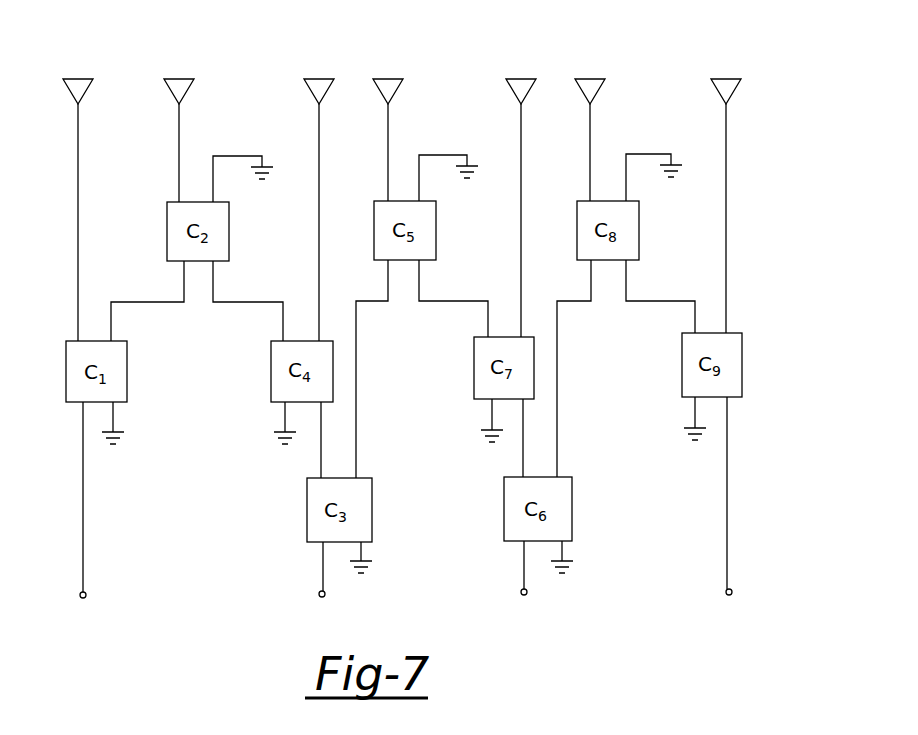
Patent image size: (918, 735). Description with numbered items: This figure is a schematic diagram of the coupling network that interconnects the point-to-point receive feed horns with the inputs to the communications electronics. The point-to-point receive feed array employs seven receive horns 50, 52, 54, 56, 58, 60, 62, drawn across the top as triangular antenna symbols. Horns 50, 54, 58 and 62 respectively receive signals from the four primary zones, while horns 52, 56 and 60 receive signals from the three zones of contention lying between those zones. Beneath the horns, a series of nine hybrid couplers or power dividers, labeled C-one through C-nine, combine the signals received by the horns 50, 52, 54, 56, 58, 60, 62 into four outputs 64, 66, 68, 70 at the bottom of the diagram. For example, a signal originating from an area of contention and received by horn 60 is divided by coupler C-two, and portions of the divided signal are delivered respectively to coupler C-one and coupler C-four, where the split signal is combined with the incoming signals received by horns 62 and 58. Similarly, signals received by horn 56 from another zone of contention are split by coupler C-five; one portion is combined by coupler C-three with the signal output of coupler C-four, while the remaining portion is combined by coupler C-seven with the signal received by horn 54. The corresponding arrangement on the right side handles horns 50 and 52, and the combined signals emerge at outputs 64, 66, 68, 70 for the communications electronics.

The receive horn 50 is at (734, 79).
The receive horn 52 is at (598, 79).
The receive horn 54 is at (530, 79).
The receive horn 56 is at (396, 79).
The receive horn 58 is at (327, 79).
The receive horn 60 is at (190, 79).
The receive horn 62 is at (91, 79).
The output 64 is at (85, 598).
The output 66 is at (325, 596).
The output 68 is at (526, 595).
The output 70 is at (729, 595).